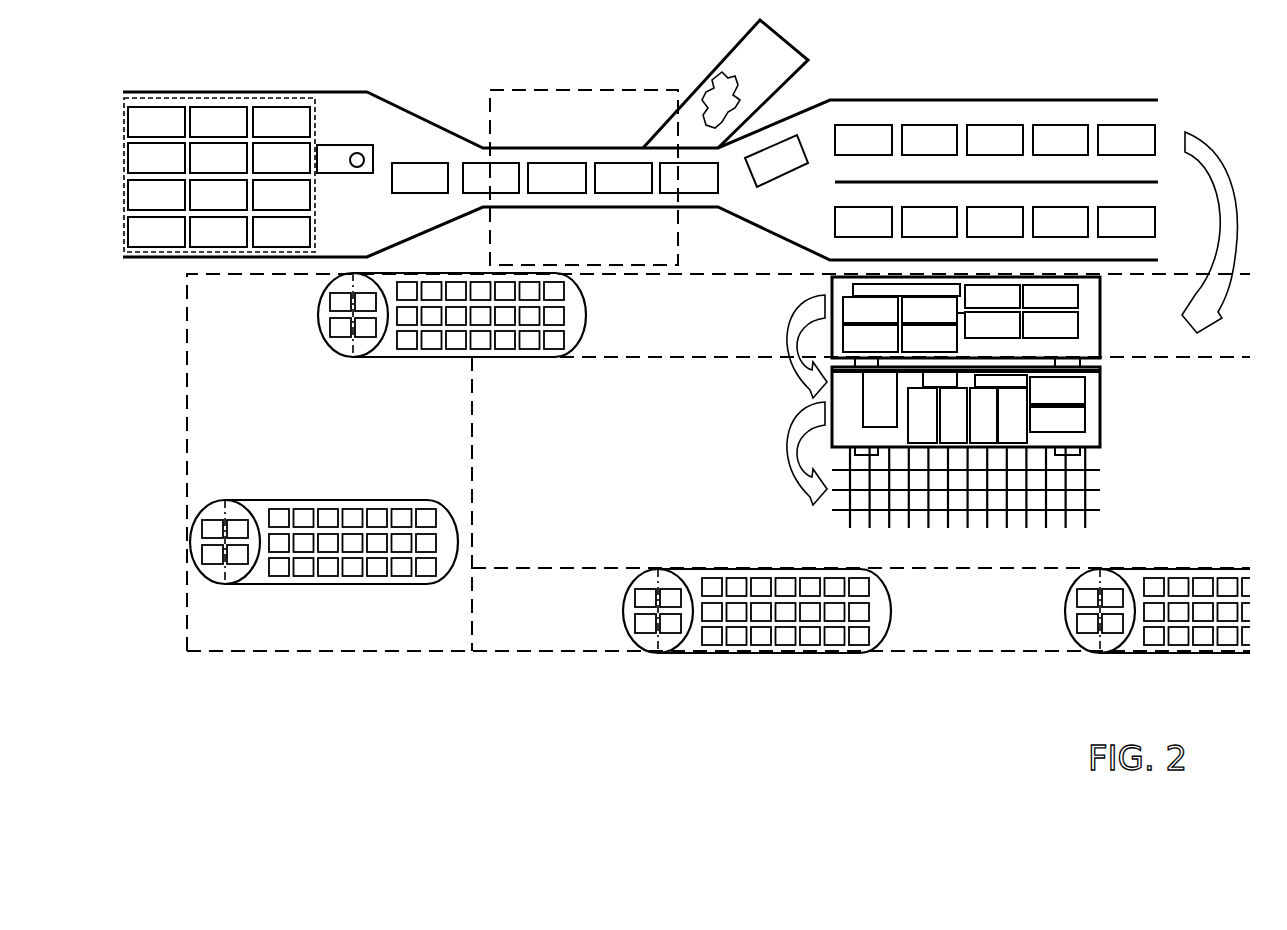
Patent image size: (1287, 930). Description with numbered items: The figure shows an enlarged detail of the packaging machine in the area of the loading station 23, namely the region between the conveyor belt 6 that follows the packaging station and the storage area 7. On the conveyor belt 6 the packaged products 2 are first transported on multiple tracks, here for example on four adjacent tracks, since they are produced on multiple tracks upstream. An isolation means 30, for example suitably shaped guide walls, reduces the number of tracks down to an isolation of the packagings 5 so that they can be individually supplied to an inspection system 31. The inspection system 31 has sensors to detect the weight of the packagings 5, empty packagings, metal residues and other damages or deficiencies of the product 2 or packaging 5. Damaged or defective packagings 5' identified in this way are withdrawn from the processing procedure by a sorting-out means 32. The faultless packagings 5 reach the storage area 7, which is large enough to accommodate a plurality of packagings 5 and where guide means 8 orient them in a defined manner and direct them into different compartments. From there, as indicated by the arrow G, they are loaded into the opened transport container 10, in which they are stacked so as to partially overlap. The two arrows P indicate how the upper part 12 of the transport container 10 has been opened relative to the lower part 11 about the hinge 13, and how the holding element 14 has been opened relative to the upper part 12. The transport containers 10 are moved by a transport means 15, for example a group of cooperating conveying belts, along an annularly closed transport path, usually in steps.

The packaged product 2 is at (358, 152).
The packaging 5 is at (732, 340).
The defective packaging 5' is at (700, 92).
The conveyor belt 6 is at (283, 92).
The storage area 7 is at (990, 118).
The guide means 8 is at (840, 182).
The transport container 10 is at (358, 500).
The lower part 11 is at (1100, 293).
The upper part 12 is at (1100, 412).
The hinge 13 is at (1080, 356).
The holding element 14 is at (1085, 482).
The transport means 15 is at (198, 420).
The loading station 23 is at (1136, 82).
The isolation means 30 is at (427, 125).
The inspection system 31 is at (505, 90).
The sorting-out means 32 is at (725, 81).
The arrow G is at (1214, 232).
The arrows P is at (797, 400).